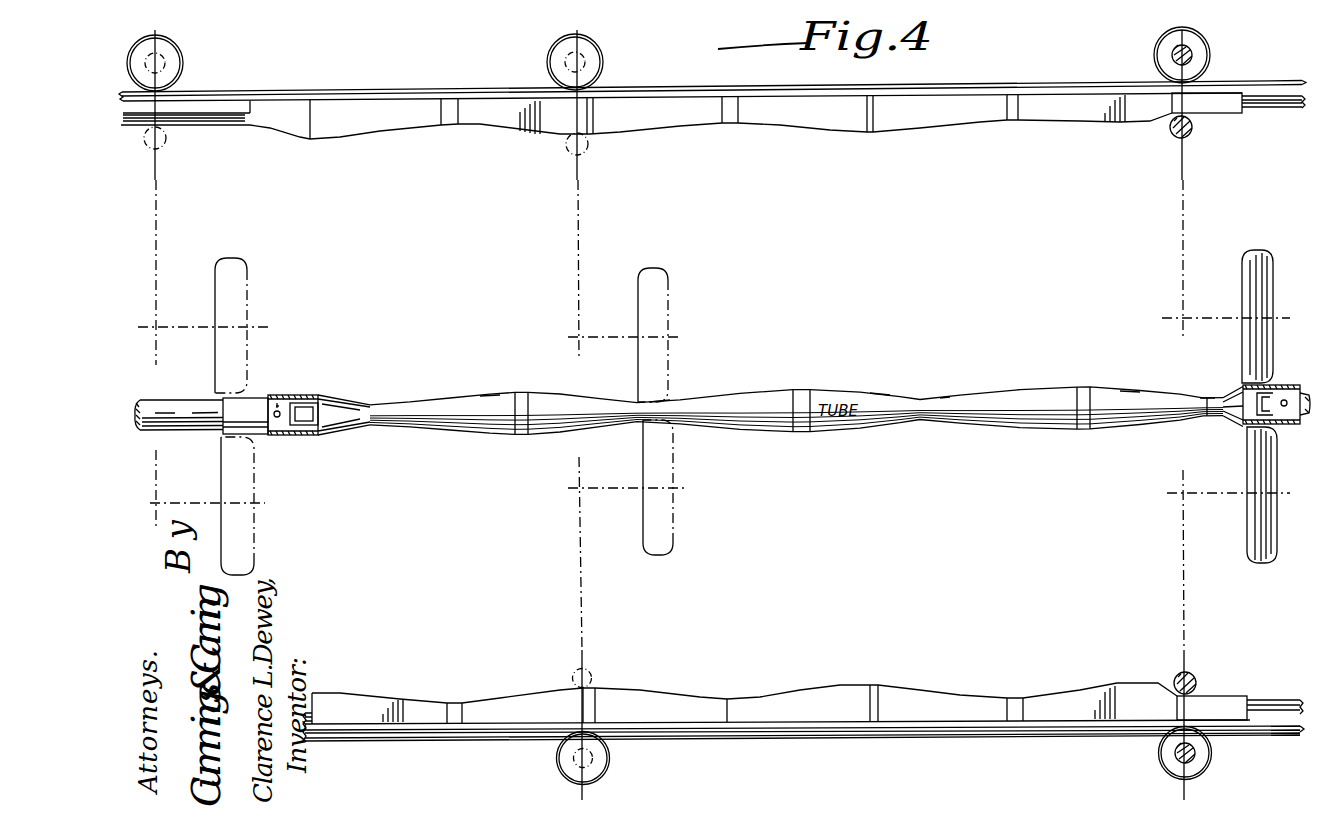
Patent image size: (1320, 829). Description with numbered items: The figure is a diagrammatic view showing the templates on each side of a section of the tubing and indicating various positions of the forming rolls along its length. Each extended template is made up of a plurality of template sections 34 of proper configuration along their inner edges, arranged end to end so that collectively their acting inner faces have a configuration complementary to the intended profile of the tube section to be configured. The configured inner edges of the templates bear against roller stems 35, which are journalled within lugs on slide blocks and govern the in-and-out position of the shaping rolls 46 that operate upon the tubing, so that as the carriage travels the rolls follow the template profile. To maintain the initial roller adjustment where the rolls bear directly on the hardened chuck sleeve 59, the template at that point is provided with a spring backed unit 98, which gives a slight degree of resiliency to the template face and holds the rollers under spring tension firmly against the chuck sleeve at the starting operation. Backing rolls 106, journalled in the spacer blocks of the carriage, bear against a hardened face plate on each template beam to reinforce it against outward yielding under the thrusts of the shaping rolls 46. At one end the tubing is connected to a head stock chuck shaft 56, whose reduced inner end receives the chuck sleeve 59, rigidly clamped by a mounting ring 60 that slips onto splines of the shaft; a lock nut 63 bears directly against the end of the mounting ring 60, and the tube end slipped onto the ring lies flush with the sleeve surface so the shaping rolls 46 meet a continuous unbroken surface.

The template sections 34 is at (362, 128).
The roller stems 35 is at (165, 146).
The shaping rolls 46 is at (249, 302).
The head stock chuck shaft 56 is at (186, 408).
The chuck sleeve 59 is at (250, 403).
The mounting ring 60 is at (297, 400).
The lock nut 63 is at (322, 398).
The spring backed unit 98 is at (215, 118).
The backing roll 106 is at (183, 57).